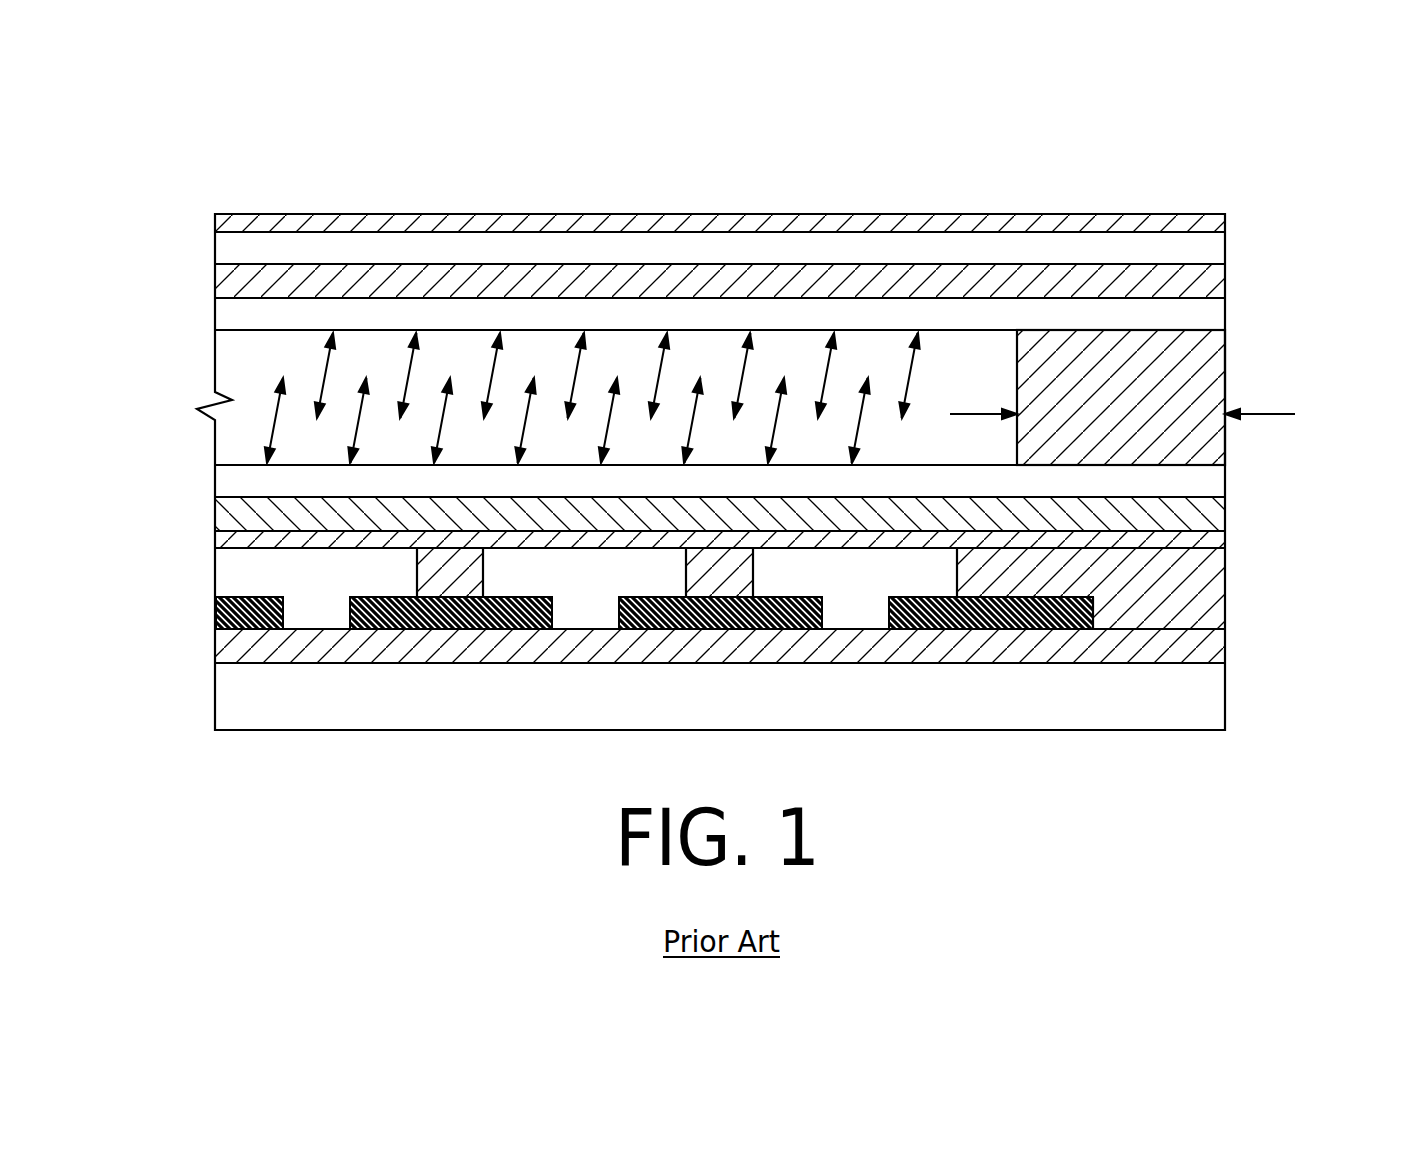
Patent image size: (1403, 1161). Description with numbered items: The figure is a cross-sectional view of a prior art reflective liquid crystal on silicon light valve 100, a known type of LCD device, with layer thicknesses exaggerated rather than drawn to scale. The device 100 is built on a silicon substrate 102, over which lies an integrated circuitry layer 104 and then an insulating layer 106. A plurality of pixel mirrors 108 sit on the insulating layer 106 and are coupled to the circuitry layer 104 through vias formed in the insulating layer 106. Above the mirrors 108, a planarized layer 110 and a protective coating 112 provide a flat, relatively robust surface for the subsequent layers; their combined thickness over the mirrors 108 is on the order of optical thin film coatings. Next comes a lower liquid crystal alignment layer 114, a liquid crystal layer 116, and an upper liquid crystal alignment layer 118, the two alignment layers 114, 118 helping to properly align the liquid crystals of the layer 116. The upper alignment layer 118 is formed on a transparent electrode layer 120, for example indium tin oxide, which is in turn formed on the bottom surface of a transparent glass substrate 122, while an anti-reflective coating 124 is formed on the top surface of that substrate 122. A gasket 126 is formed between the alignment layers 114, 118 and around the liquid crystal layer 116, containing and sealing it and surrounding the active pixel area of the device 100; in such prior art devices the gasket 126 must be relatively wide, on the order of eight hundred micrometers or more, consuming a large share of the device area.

The reflective liquid crystal on silicon light valve 100 is at (1140, 138).
The silicon substrate 102 is at (1210, 694).
The integrated circuitry layer 104 is at (232, 652).
The insulating layer 106 is at (1210, 611).
The pixel mirrors 108 is at (232, 580).
The planarized layer 110 is at (1210, 536).
The protective coating 112 is at (232, 517).
The lower liquid crystal alignment layer 114 is at (1208, 483).
The liquid crystal layer 116 is at (232, 353).
The upper liquid crystal alignment layer 118 is at (1208, 317).
The transparent electrode layer 120 is at (232, 283).
The transparent substrate 122 is at (1208, 244).
The anti-reflective coating 124 is at (232, 224).
The gasket 126 is at (1203, 378).